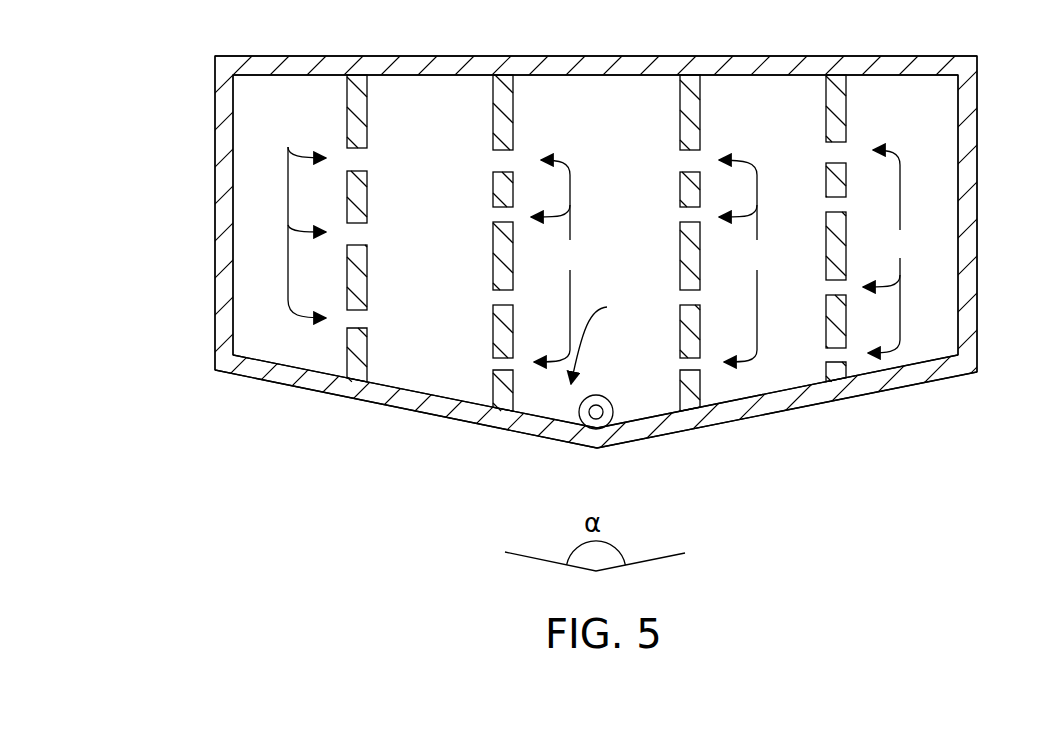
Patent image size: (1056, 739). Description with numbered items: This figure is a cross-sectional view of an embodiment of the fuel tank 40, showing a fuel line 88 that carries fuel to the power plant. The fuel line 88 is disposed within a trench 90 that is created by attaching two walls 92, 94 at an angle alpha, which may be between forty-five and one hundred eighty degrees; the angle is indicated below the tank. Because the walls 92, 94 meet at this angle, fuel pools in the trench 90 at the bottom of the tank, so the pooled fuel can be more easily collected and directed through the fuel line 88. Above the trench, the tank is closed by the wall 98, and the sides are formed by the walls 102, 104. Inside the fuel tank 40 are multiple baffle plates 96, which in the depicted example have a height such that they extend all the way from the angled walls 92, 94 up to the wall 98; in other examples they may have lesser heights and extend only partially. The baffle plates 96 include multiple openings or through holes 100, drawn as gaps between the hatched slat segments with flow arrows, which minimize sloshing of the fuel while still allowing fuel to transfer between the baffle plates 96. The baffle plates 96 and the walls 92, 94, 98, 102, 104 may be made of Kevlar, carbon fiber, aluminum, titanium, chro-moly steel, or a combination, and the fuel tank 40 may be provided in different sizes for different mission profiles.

The fuel tank 40 is at (822, 56).
The fuel line 88 is at (608, 399).
The trench 90 is at (605, 340).
The wall 92 is at (438, 404).
The wall 94 is at (772, 402).
The baffle plates 96 is at (357, 138).
The wall 98 is at (558, 64).
The openings or through holes 100 is at (596, 241).
The wall 102 is at (968, 208).
The wall 104 is at (223, 206).